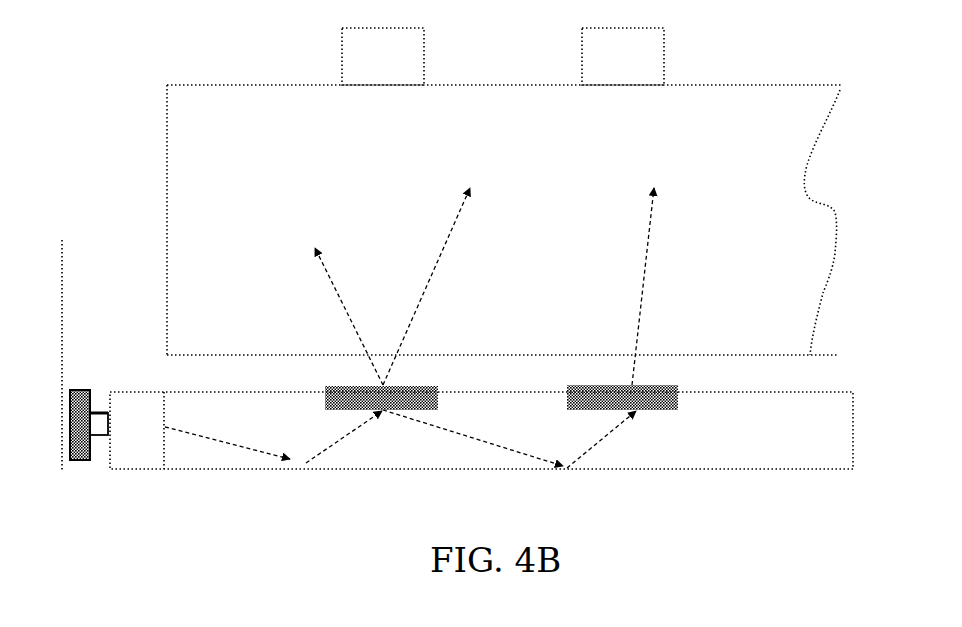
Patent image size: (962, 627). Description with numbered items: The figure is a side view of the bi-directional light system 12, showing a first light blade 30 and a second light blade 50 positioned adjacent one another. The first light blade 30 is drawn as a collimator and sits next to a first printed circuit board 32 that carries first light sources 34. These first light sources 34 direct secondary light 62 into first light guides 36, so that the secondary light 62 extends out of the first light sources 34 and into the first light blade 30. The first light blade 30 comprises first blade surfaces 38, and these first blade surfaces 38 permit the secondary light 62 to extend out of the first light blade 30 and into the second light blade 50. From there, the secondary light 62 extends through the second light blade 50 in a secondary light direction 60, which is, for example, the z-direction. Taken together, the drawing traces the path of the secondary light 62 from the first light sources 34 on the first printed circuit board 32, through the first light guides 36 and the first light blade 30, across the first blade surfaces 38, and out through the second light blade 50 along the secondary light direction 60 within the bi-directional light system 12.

The bi-directional light system 12 is at (150, 80).
The first light blade 30 is at (823, 426).
The first printed circuit board 32 is at (77, 392).
The first light sources 34 is at (101, 413).
The first light guides 36 is at (148, 392).
The first blade surfaces 38 is at (334, 398).
The second light blade 50 is at (777, 172).
The secondary light direction 60 is at (316, 243).
The secondary light 62 is at (518, 286).